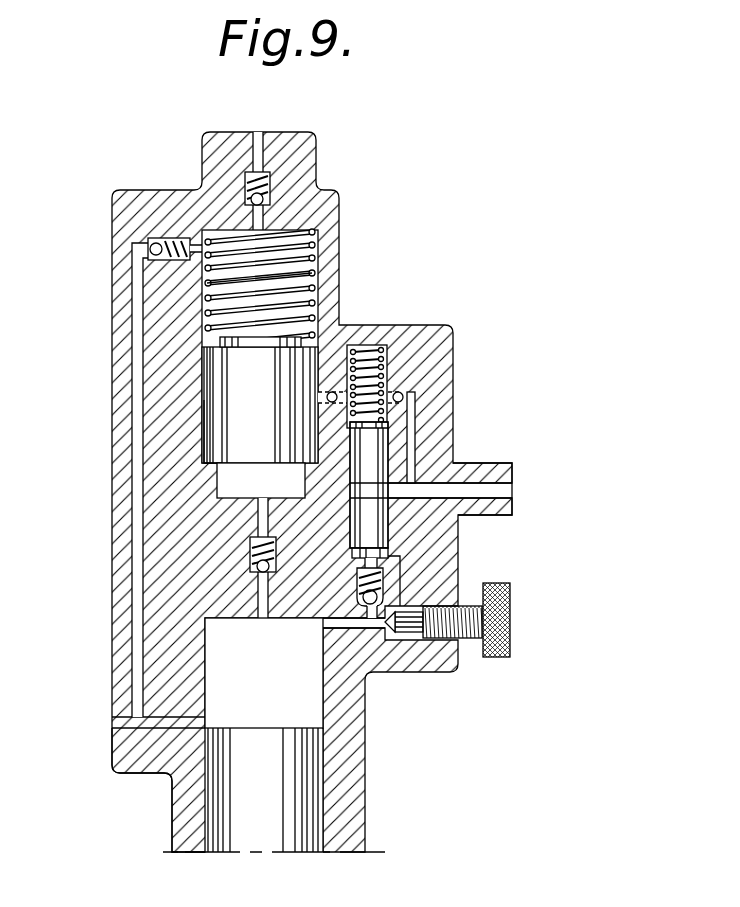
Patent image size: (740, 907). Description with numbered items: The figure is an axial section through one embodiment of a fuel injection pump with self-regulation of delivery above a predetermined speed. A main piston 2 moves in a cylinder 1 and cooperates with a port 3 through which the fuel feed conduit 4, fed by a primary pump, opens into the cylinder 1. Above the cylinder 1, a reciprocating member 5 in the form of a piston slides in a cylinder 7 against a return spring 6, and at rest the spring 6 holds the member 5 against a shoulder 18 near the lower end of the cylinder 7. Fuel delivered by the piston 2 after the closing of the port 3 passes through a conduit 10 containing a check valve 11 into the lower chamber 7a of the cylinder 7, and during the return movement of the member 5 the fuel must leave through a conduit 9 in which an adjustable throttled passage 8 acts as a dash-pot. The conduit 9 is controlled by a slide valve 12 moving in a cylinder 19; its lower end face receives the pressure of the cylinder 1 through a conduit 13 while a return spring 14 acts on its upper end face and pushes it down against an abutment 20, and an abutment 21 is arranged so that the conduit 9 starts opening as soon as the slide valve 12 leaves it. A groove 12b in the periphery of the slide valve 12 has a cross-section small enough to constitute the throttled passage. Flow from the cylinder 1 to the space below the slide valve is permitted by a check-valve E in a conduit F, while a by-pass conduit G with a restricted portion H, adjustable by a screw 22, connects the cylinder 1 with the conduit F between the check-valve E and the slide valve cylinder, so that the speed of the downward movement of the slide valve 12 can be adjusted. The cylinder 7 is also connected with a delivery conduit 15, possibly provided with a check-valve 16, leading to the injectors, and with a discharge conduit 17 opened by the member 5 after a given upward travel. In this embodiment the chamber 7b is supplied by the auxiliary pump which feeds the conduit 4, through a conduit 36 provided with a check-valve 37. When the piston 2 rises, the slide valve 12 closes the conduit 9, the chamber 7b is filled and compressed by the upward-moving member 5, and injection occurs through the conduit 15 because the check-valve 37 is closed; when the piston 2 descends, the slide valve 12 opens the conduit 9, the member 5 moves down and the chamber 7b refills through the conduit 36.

The cylinder 1 is at (323, 718).
The main piston 2 is at (283, 781).
The port 3 is at (208, 719).
The fuel feed conduit 4 is at (165, 737).
The reciprocating member 5 is at (228, 390).
The return spring 6 is at (308, 234).
The cylinder 7 is at (208, 292).
The lower chamber 7a is at (217, 472).
The chamber 7b is at (288, 284).
The adjustable throttled passage 8 is at (400, 476).
The conduit 9 is at (372, 493).
The conduit 10 is at (262, 604).
The check valve 11 is at (250, 570).
The slide valve 12 is at (498, 479).
The groove 12b is at (386, 482).
The conduit 13 is at (306, 620).
The return spring 14 is at (380, 355).
The delivery conduit 15 is at (258, 222).
The check-valve 16 is at (270, 190).
The discharge conduit 17 is at (326, 397).
The shoulder 18 is at (210, 459).
The cylinder 19 is at (403, 400).
The abutment 20 is at (352, 547).
The abutment 21 is at (416, 394).
The screw 22 is at (510, 631).
The conduit 36 is at (140, 661).
The check-valve 37 is at (150, 246).
The check-valve E is at (380, 600).
The conduit F is at (378, 578).
The by-pass conduit G is at (446, 638).
The restricted portion H is at (392, 628).